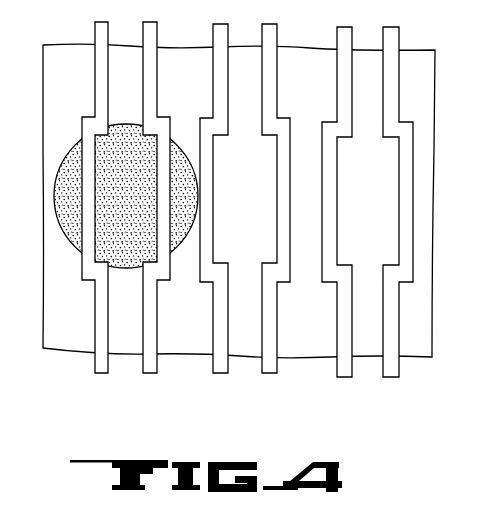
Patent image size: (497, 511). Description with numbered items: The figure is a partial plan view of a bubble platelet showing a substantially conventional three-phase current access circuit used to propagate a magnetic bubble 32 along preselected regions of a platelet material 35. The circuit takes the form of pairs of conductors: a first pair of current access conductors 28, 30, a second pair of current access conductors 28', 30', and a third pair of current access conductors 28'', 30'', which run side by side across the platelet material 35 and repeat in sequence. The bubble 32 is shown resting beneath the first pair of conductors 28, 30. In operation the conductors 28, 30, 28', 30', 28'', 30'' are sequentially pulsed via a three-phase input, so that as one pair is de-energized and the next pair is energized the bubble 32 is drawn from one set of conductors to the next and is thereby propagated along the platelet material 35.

The current access conductor 28 is at (95, 222).
The current access conductor 30 is at (152, 222).
The current access conductor 28' is at (219, 223).
The current access conductor 30' is at (272, 223).
The current access conductor 28'' is at (343, 225).
The current access conductor 30'' is at (400, 225).
The bubble 32 is at (75, 249).
The platelet material 35 is at (420, 50).